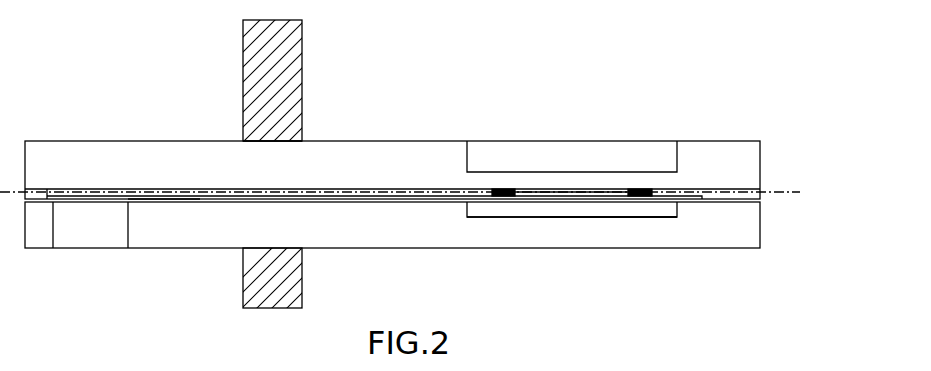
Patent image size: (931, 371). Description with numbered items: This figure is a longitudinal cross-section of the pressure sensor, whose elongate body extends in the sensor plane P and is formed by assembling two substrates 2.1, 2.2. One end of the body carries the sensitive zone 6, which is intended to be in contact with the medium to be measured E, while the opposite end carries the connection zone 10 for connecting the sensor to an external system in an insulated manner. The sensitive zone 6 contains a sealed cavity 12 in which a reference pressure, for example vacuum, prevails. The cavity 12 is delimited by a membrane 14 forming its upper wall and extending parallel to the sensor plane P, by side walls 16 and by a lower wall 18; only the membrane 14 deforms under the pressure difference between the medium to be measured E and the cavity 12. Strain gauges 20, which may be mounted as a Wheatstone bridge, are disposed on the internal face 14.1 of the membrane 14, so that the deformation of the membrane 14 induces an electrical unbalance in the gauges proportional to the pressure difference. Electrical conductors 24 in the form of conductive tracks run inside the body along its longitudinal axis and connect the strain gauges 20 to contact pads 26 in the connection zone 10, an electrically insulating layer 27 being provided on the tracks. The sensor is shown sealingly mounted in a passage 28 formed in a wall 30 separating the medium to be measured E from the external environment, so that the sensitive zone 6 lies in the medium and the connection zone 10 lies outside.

The substrate 2.1 is at (755, 153).
The substrate 2.2 is at (748, 228).
The sensitive zone 6 is at (570, 232).
The connection zone 10 is at (65, 234).
The sealed cavity 12 is at (620, 216).
The membrane 14 is at (505, 190).
The internal face of the membrane 14.1 is at (572, 191).
The side walls 16 is at (450, 212).
The lower wall 18 is at (517, 230).
The strain gauges 20 is at (508, 190).
The electrical conductors 24 is at (360, 190).
The contact pads 26 is at (106, 202).
The electrically insulating layer 27 is at (178, 202).
The passage 28 is at (257, 139).
The wall 30 is at (280, 62).
The sensor plane P is at (788, 192).
The medium to be measured E is at (579, 50).